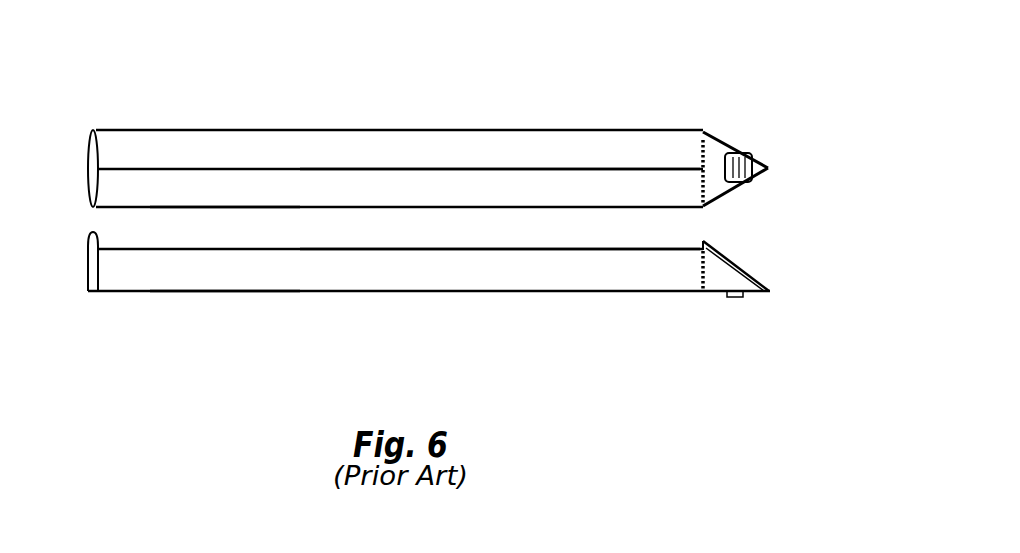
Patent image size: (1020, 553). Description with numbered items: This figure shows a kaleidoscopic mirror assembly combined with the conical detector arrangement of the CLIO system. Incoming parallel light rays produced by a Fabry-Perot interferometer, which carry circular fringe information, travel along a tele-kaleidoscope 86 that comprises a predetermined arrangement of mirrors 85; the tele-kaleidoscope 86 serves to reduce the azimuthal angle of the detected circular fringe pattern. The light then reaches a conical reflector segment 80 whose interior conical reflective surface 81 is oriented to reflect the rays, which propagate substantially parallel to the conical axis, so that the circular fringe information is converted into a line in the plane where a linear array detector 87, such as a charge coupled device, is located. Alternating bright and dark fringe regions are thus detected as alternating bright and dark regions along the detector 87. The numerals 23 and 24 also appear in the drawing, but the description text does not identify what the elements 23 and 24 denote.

The needles 23 is at (92, 192).
The distal end portion 24 is at (700, 158).
The conical reflector segment 80 is at (722, 188).
The conical reflective surface 81 is at (731, 263).
The mirrors 85 is at (453, 153).
The tele-kaleidoscope 86 is at (170, 214).
The linear array detector 87 is at (738, 156).